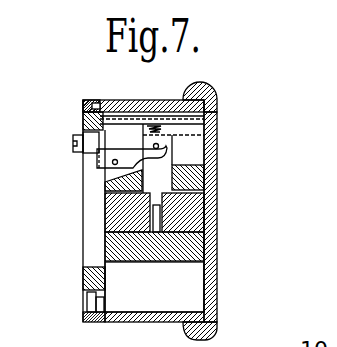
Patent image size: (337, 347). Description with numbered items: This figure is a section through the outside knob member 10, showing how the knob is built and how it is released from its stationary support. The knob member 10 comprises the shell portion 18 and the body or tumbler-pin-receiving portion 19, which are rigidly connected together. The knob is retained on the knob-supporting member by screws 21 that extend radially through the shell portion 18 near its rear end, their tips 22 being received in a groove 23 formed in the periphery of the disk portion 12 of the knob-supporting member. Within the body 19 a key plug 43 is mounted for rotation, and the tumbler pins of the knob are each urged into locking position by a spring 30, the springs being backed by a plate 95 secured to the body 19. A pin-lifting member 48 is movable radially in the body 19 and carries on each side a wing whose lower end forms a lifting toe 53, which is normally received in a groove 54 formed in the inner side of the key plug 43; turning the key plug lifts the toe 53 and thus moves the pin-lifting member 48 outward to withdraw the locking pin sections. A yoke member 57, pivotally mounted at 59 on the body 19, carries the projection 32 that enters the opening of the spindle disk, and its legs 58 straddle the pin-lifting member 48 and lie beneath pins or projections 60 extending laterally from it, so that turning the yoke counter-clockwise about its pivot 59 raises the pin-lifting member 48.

The outside knob member 10 is at (158, 101).
The disk portion 12 is at (85, 273).
The shell portion 18 is at (142, 318).
The body or tumbler-pin-receiving portion 19 is at (200, 246).
The screws 21 is at (88, 99).
The tips 22 is at (85, 116).
The groove 23 is at (90, 297).
The spring 30 is at (200, 98).
The projection 32 is at (78, 137).
The key plug 43 is at (200, 228).
The pin-lifting member 48 is at (160, 147).
The lifting toe 53 is at (150, 195).
The groove 54 is at (195, 205).
The yoke member 57 is at (119, 148).
The legs 58 is at (133, 152).
The pivot 59 is at (112, 163).
The pins or projections 60 is at (164, 149).
The plate 95 is at (146, 118).